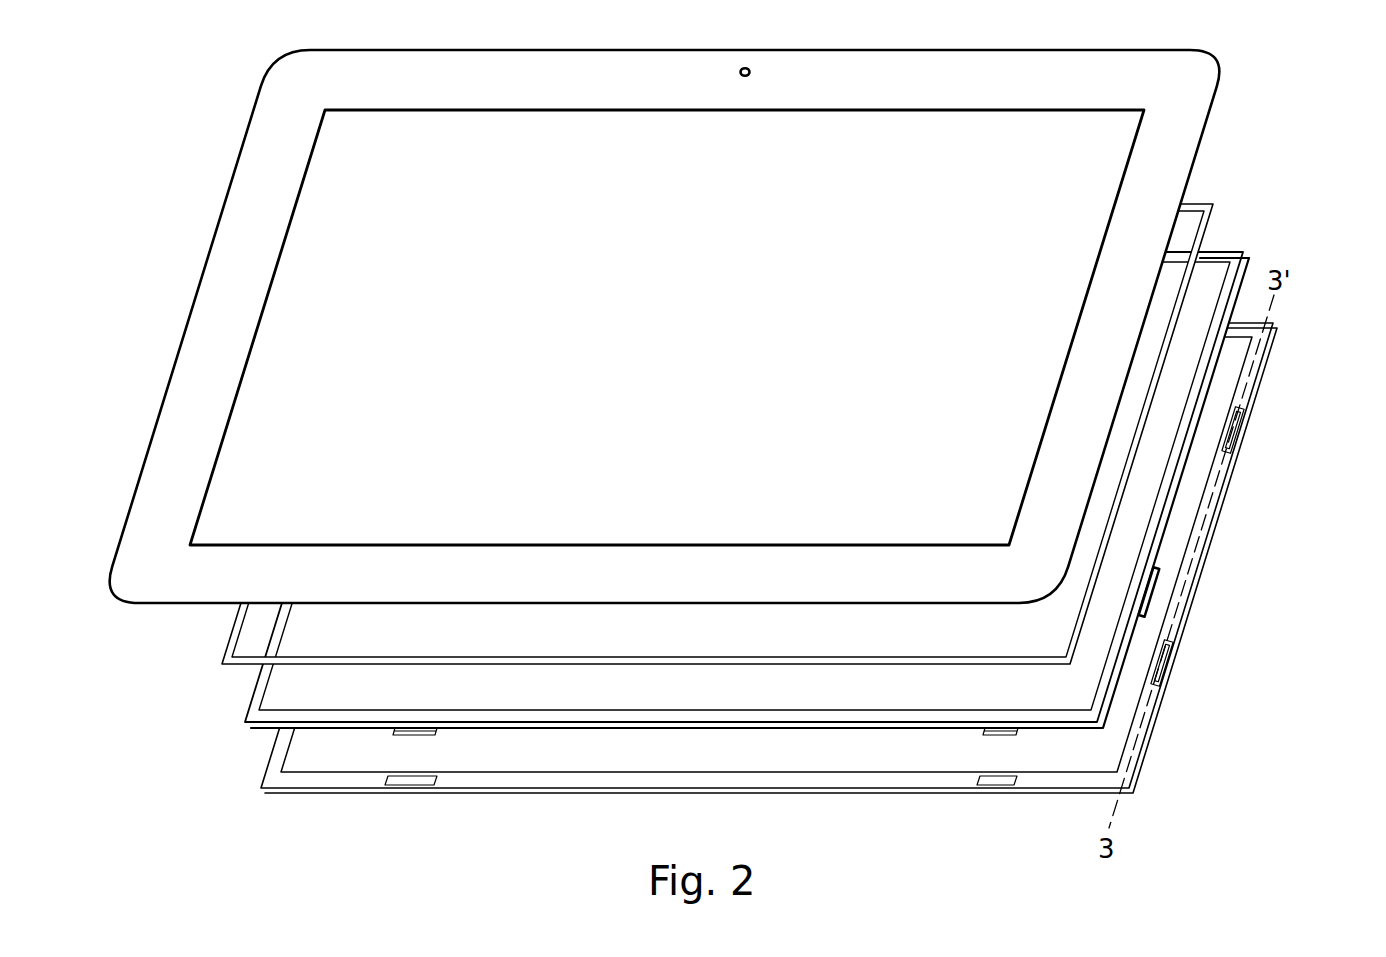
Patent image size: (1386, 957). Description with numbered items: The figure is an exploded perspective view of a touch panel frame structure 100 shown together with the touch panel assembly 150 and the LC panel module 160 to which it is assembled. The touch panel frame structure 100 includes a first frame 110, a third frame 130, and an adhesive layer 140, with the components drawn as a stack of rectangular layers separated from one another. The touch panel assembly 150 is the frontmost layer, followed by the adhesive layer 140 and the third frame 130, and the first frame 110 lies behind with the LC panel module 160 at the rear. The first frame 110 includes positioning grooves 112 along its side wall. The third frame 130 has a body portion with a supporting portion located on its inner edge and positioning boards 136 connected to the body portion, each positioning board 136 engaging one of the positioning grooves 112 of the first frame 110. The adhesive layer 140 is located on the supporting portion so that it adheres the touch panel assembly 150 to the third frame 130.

The touch panel frame structure 100 is at (736, 439).
The first frame 110 is at (1192, 568).
The positioning grooves 112 is at (1176, 687).
The third frame 130 is at (1207, 350).
The positioning boards 136 is at (1153, 590).
The adhesive layer 140 is at (1124, 478).
The touch panel assembly 150 is at (1198, 97).
The LC panel module 160 is at (1107, 747).